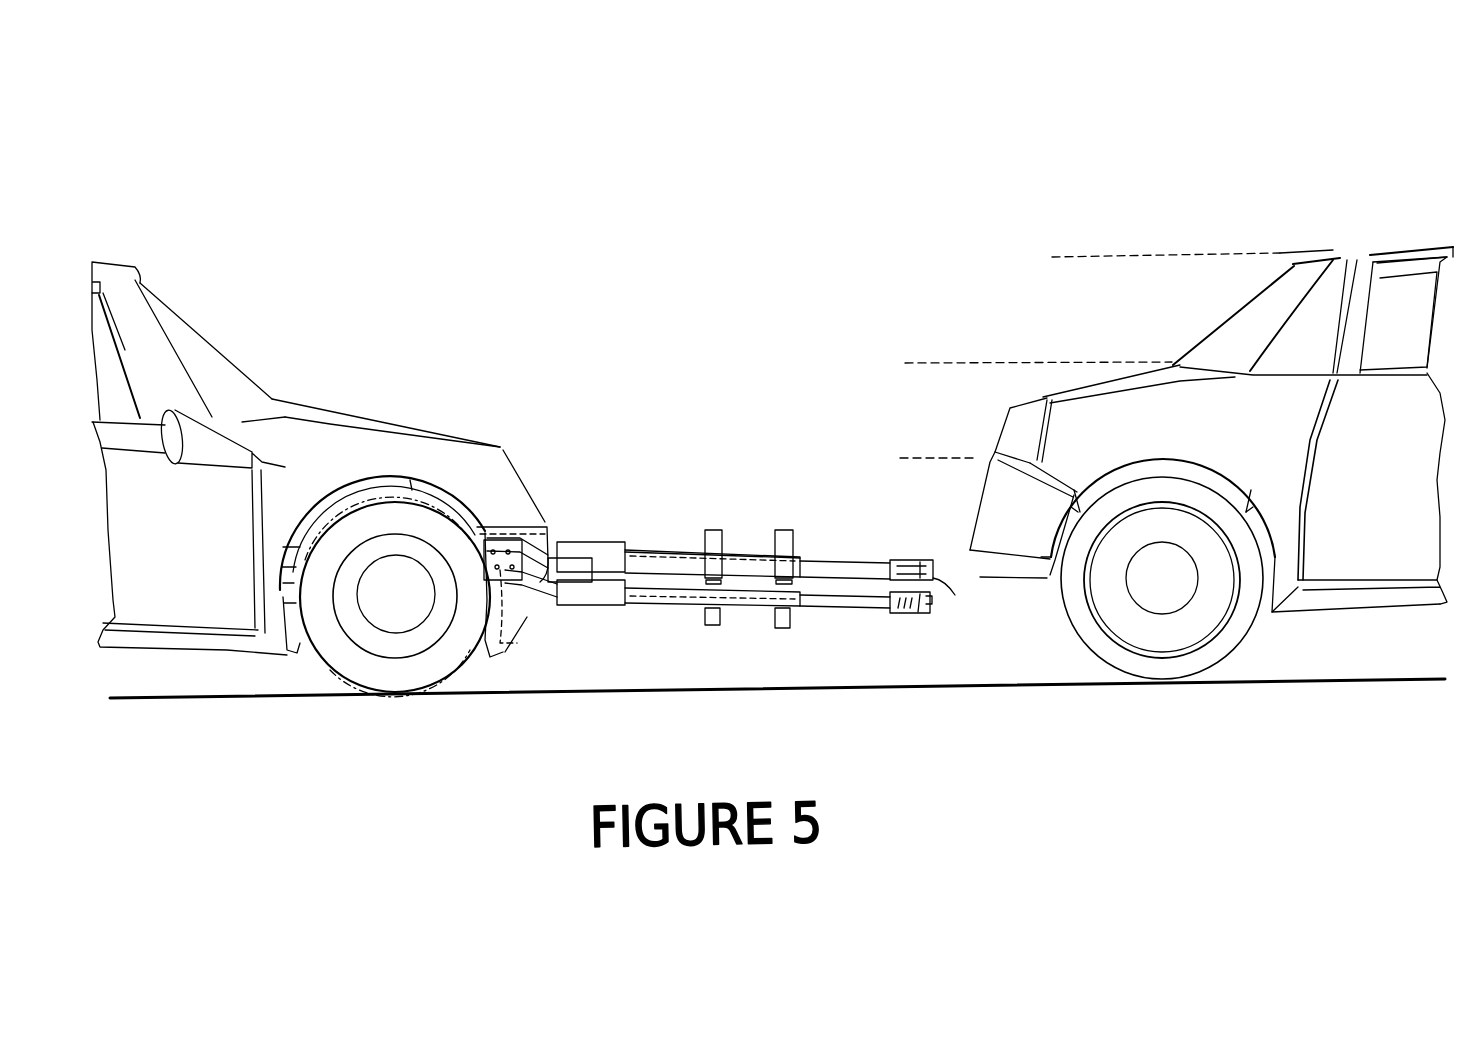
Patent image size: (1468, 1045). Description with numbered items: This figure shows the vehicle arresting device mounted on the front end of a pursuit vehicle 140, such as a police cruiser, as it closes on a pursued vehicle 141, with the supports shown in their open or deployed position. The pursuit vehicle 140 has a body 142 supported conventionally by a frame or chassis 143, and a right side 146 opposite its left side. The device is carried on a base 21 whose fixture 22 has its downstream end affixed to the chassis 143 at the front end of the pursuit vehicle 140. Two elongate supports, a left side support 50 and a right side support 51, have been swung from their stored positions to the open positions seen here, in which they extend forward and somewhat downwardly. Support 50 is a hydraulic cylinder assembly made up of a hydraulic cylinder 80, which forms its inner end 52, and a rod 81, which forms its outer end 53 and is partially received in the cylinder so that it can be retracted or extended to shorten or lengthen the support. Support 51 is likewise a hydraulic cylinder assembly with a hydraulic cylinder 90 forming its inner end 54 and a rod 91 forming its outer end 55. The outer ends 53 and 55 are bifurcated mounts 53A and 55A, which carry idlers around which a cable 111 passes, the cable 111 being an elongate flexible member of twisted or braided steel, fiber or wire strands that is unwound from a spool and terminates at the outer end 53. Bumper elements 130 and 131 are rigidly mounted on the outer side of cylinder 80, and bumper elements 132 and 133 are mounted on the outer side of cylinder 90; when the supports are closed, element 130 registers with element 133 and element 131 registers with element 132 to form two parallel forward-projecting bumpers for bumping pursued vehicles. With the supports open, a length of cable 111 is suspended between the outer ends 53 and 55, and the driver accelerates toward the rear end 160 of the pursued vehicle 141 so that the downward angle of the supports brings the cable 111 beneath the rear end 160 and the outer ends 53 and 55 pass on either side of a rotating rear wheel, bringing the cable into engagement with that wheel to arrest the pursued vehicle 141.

The base 21 is at (540, 588).
The fixture 22 is at (545, 540).
The support 50 is at (747, 604).
The support 51 is at (678, 552).
The inner end 52 is at (572, 605).
The outer end 53 is at (927, 613).
The bifurcated mount 53A is at (917, 613).
The inner end 54 is at (576, 542).
The outer end 55 is at (898, 560).
The bifurcated mount 55A is at (933, 562).
The hydraulic cylinder 80 is at (670, 604).
The rod 81 is at (850, 608).
The hydraulic cylinder 90 is at (650, 550).
The rod 91 is at (855, 562).
The cable 111 is at (930, 598).
The bumper element 130 is at (717, 627).
The bumper element 131 is at (780, 628).
The bumper element 132 is at (716, 530).
The bumper element 133 is at (785, 530).
The pursuit vehicle 140 is at (167, 322).
The pursued vehicle 141 is at (1354, 258).
The body 142 is at (135, 283).
The chassis 143 is at (503, 533).
The right side 146 is at (160, 602).
The rear end 160 is at (1023, 422).